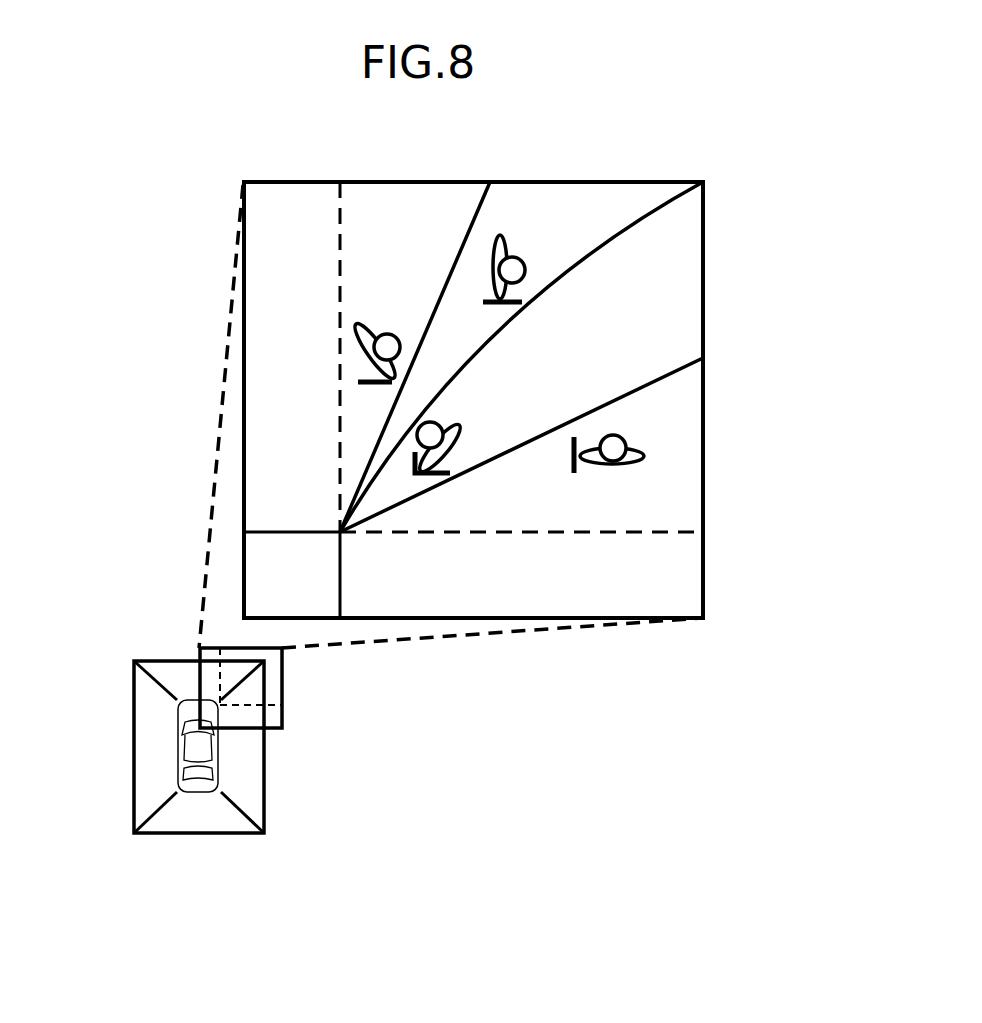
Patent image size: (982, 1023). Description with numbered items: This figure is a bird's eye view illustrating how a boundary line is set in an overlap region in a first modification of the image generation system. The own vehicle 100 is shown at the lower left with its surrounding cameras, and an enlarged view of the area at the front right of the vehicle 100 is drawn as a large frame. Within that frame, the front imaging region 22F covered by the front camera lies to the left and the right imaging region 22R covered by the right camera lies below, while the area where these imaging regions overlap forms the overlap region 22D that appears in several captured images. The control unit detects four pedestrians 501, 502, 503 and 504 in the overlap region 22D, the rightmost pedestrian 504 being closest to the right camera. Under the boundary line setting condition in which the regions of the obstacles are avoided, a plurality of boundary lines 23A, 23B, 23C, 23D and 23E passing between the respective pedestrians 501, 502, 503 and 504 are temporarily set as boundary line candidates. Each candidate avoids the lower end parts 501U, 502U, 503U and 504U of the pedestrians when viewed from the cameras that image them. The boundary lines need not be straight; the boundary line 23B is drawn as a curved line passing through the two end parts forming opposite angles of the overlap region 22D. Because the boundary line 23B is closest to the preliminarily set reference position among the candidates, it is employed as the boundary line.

The vehicle 100 is at (192, 757).
The front imaging region 22F is at (275, 300).
The overlap region 22D is at (678, 267).
The right imaging region 22R is at (524, 590).
The boundary line 23A is at (645, 378).
The boundary line 23B is at (622, 225).
The boundary line 23C is at (478, 213).
The boundary line 23D is at (598, 528).
The boundary line 23E is at (338, 248).
The pedestrian 501 is at (512, 235).
The lower end part 501U is at (518, 303).
The pedestrian 502 is at (390, 330).
The lower end part 502U is at (378, 385).
The pedestrian 503 is at (448, 418).
The lower end part 503U is at (426, 476).
The rightmost pedestrian 504 is at (621, 438).
The lower end part 504U is at (571, 452).